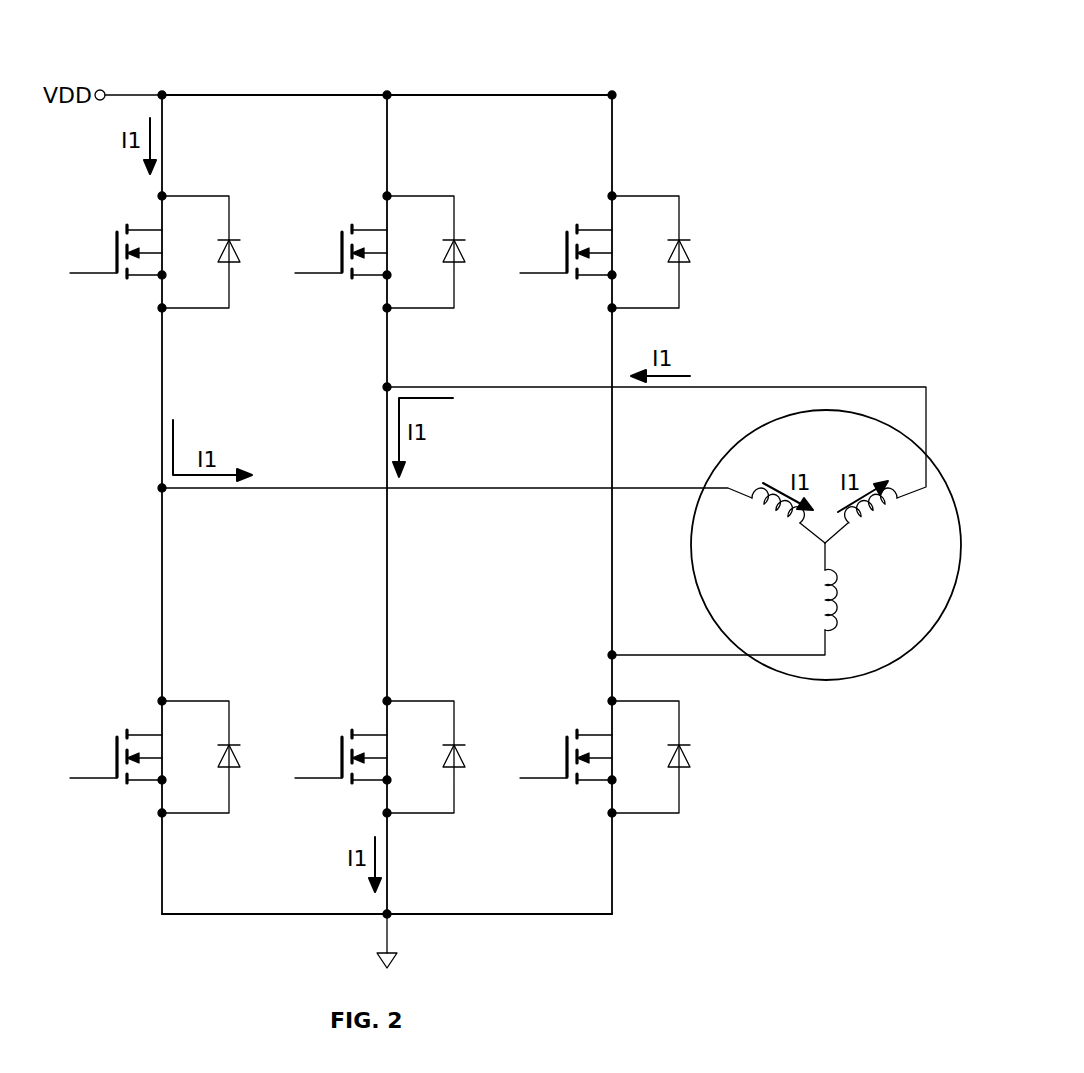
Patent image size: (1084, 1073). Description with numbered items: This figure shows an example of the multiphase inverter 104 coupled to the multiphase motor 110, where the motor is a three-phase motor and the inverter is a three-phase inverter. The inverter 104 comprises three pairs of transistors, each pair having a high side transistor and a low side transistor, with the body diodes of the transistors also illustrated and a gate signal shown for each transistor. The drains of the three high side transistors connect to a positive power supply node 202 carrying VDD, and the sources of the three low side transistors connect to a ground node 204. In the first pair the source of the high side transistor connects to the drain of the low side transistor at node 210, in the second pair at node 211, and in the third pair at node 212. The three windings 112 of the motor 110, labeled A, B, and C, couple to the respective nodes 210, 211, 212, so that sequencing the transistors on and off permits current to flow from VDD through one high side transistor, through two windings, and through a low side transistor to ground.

The multiphase inverter 104 is at (467, 460).
The positive power supply node 202 is at (387, 66).
The ground node 204 is at (387, 942).
The node 210 is at (418, 474).
The node 211 is at (617, 424).
The node 212 is at (679, 639).
The multiphase motor 110 is at (826, 577).
The windings 112 is at (831, 562).